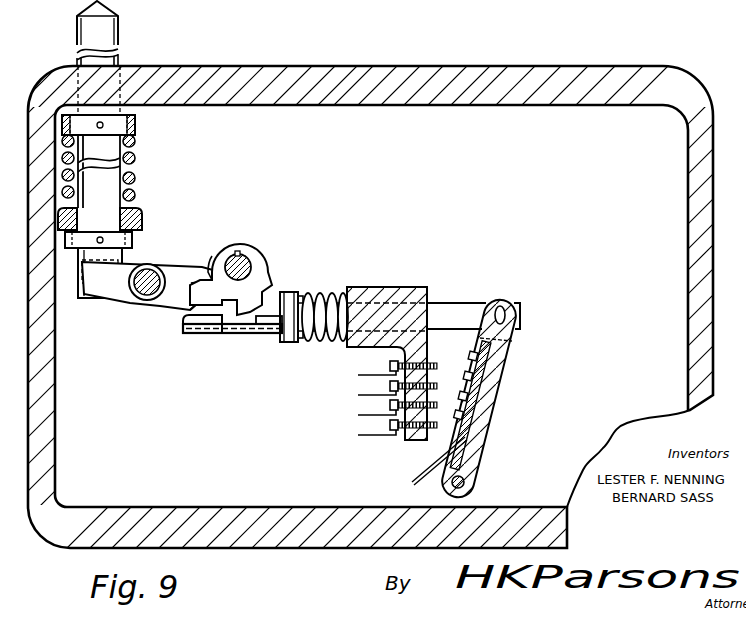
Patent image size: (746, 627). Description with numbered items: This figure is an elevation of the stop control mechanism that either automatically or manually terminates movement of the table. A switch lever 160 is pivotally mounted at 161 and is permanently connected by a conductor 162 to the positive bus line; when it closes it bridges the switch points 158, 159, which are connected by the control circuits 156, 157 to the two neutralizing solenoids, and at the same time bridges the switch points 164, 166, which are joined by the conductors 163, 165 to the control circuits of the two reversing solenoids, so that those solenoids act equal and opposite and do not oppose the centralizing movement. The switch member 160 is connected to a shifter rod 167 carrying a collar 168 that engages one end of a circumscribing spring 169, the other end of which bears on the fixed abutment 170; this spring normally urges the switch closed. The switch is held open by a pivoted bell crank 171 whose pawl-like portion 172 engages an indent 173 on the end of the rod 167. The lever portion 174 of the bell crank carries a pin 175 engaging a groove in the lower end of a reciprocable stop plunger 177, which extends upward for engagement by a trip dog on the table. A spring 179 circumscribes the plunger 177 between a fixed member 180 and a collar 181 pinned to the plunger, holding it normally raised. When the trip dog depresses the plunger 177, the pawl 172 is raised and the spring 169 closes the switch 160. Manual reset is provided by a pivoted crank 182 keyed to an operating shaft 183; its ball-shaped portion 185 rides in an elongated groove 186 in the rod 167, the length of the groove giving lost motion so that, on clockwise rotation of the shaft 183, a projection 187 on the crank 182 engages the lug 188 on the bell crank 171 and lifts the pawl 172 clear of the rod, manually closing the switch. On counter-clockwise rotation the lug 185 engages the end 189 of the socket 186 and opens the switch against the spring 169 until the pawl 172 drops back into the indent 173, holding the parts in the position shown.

The control circuit 156 is at (405, 357).
The control circuit 157 is at (405, 375).
The switch point 158 is at (437, 365).
The switch point 159 is at (437, 385).
The switch lever 160 is at (503, 346).
The pivot 161 is at (472, 482).
The conductor 162 is at (413, 480).
The conductor 163 is at (399, 409).
The switch point 164 is at (437, 404).
The conductor 165 is at (392, 440).
The switch point 166 is at (438, 429).
The shifter rod 167 is at (460, 303).
The collar 168 is at (299, 294).
The spring 169 is at (330, 294).
The fixed abutment 170 is at (384, 289).
The bell crank 171 is at (147, 301).
The pawl-like portion 172 is at (184, 312).
The indent 173 is at (197, 324).
The lever portion 174 is at (124, 262).
The pin 175 is at (99, 280).
The stop plunger 177 is at (119, 40).
The spring 179 is at (137, 165).
The fixed member 180 is at (139, 209).
The collar 181 is at (136, 125).
The pivoted crank 182 is at (263, 273).
The operating shaft 183 is at (243, 256).
The ball-shaped portion 185 is at (285, 292).
The elongated groove 186 is at (225, 334).
The projection 187 is at (213, 256).
The lug 188 is at (192, 272).
The end of socket 189 is at (264, 332).